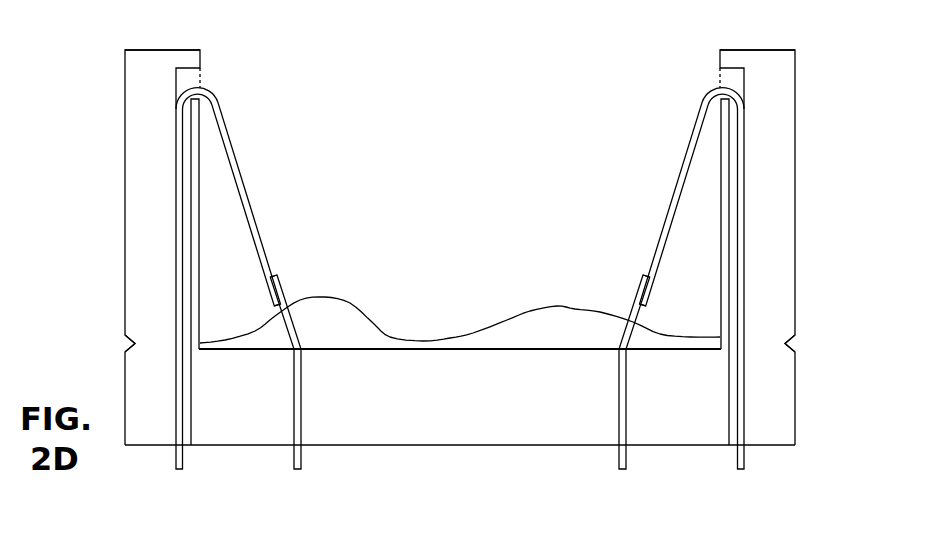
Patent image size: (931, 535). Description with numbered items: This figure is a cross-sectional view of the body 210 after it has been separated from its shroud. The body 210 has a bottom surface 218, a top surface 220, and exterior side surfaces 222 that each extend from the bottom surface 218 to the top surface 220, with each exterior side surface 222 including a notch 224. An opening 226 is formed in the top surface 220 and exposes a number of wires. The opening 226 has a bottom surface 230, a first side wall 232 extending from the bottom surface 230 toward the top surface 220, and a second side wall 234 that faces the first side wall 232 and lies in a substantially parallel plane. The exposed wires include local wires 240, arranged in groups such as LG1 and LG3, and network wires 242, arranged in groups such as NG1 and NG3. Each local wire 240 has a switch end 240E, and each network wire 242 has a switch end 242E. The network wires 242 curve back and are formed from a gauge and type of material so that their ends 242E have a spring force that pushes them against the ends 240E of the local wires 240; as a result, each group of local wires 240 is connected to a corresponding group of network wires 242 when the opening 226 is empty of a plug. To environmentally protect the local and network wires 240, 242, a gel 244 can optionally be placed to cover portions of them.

The body 210 is at (125, 112).
The bottom surface 218 is at (140, 447).
The top surface 220 is at (148, 49).
The exterior side surface 222 is at (125, 163).
The notch 224 is at (123, 342).
The opening 226 is at (461, 74).
The bottom surface 230 is at (355, 346).
The first side wall 232 is at (200, 296).
The second side wall 234 is at (720, 296).
The local wire 240 is at (302, 414).
The switch end 240E is at (283, 288).
The network wire 242 is at (183, 380).
The switch end 242E is at (266, 288).
The gel 244 is at (184, 76).
The group of network wires NG1 is at (247, 187).
The group of network wires NG3 is at (673, 187).
The group of local wires LG1 is at (296, 327).
The group of local wires LG3 is at (620, 334).